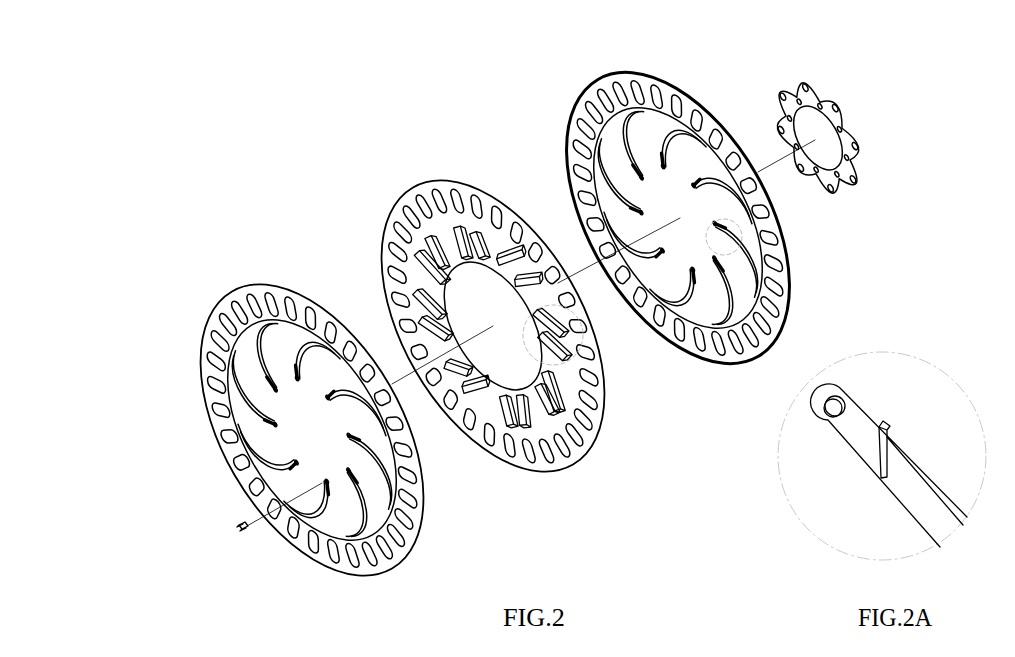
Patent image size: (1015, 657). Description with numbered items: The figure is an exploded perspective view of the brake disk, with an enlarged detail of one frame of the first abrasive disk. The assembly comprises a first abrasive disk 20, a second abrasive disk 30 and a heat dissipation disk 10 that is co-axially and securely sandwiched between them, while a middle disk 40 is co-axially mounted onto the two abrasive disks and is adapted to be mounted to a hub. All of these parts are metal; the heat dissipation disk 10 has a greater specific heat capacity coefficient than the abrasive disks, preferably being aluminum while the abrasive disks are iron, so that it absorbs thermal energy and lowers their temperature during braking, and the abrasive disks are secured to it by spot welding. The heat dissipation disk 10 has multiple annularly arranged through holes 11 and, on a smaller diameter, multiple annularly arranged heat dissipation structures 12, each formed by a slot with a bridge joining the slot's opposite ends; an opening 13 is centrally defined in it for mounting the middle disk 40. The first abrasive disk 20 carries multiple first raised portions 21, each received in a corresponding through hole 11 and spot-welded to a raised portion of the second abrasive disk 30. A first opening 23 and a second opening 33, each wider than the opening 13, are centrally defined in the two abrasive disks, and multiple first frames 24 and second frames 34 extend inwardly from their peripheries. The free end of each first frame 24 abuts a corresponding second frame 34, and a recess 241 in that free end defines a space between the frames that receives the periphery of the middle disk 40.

In FIG. 2, the heat dissipation disk 10 is at (332, 234).
In FIG. 2, the through holes 11 is at (492, 326).
In FIG. 2, the heat dissipation structures 12 is at (585, 339).
In FIG. 2, the opening 13 is at (493, 326).
In FIG. 2, the first abrasive disk 20 is at (523, 153).
In FIG. 2, the first raised portions 21 is at (677, 218).
In FIG. 2, the first opening 23 is at (638, 142).
In FIG. 2, the first frames 24 is at (723, 200).
In FIG. 2A, the first frames 24 is at (930, 508).
In FIG. 2, the recess 241 is at (727, 233).
In FIG. 2A, the recess 241 is at (883, 455).
In FIG. 2, the second abrasive disk 30 is at (166, 302).
In FIG. 2, the second opening 33 is at (240, 408).
In FIG. 2, the second frames 34 is at (352, 499).
In FIG. 2, the middle disk 40 is at (841, 82).